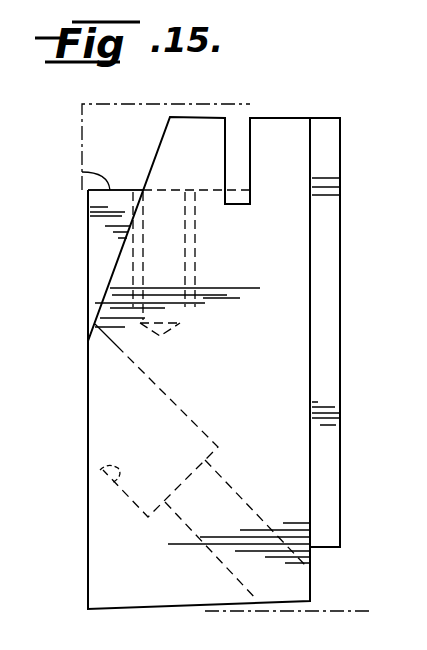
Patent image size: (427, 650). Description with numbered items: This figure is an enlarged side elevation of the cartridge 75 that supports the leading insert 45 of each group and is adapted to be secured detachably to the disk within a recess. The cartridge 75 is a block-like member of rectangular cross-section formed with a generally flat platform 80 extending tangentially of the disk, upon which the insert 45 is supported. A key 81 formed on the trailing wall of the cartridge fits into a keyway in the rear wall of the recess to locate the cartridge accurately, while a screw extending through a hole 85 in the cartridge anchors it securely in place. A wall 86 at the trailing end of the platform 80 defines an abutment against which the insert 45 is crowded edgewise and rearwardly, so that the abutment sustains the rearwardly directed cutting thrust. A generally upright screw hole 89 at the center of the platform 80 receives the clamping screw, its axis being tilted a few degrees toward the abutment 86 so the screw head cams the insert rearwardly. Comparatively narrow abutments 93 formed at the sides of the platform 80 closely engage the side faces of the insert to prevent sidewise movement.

The leading insert 45 is at (107, 123).
The cartridge 75 is at (118, 569).
The platform 80 is at (82, 172).
The key 81 is at (332, 267).
The hole 85 is at (88, 481).
The wall 86 is at (246, 140).
The screw hole 89 is at (185, 246).
The abutments 93 is at (215, 130).